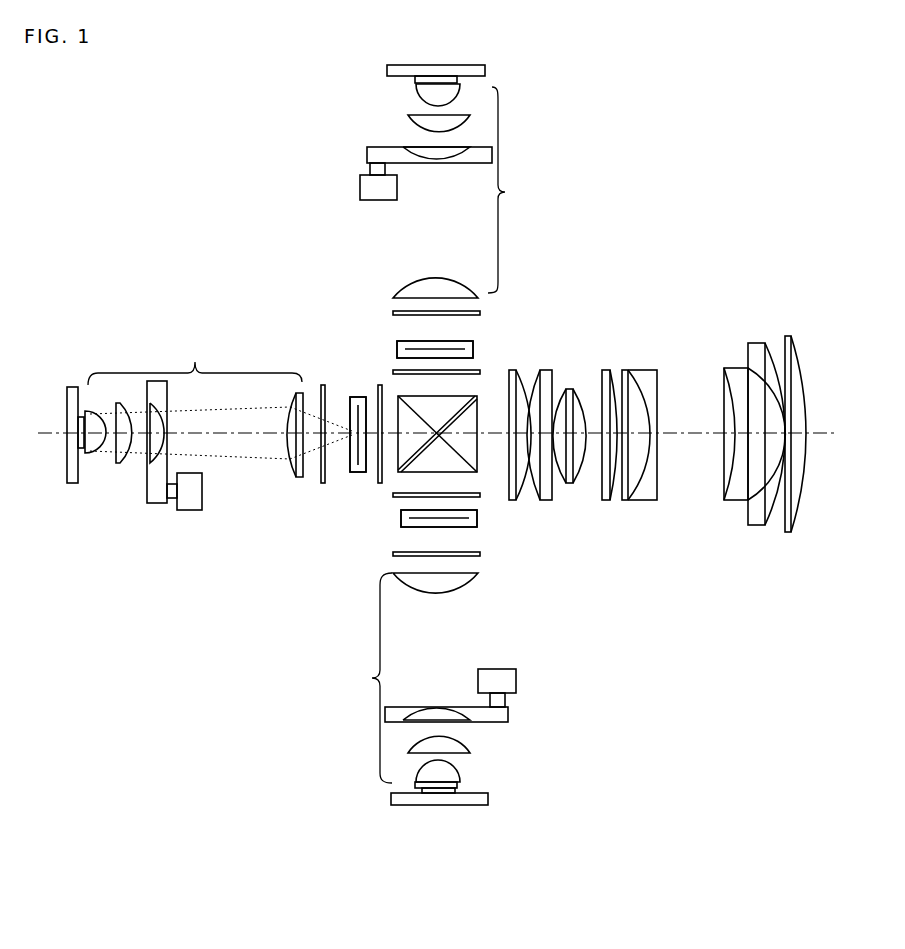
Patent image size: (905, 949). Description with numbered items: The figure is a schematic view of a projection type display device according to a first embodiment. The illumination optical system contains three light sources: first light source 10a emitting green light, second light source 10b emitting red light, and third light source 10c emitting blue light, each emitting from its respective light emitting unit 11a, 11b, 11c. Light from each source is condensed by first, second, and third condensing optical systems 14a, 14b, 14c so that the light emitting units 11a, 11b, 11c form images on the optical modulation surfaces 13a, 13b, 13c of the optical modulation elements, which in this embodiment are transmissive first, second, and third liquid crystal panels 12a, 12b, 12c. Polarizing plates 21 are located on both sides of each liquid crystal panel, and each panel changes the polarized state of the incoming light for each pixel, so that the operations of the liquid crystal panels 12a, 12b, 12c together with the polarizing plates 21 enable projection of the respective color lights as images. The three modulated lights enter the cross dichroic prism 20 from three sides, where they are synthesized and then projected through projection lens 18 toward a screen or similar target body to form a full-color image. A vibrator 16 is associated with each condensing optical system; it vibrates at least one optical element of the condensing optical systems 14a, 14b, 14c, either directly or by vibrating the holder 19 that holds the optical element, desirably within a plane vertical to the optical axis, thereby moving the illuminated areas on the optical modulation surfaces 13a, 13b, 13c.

The first light source 10a is at (70, 483).
The second light source 10b is at (487, 72).
The third light source 10c is at (453, 805).
The light emitting unit 11a is at (102, 463).
The light emitting unit 11b is at (405, 105).
The light emitting unit 11c is at (412, 772).
The first liquid crystal panel 12a is at (355, 397).
The second liquid crystal panel 12b is at (472, 338).
The third liquid crystal panel 12c is at (402, 518).
The optical modulation surface 13a is at (343, 412).
The optical modulation surface 13b is at (418, 341).
The optical modulation surface 13c is at (472, 534).
The first condensing optical system 14a is at (195, 406).
The second condensing optical system 14b is at (522, 190).
The third condensing optical system 14c is at (360, 678).
The vibrator 16 is at (362, 186).
The projection lens 18 is at (813, 523).
The holder 19 is at (492, 155).
The cross dichroic prism 20 is at (468, 418).
The polarizing plates 21 is at (380, 484).